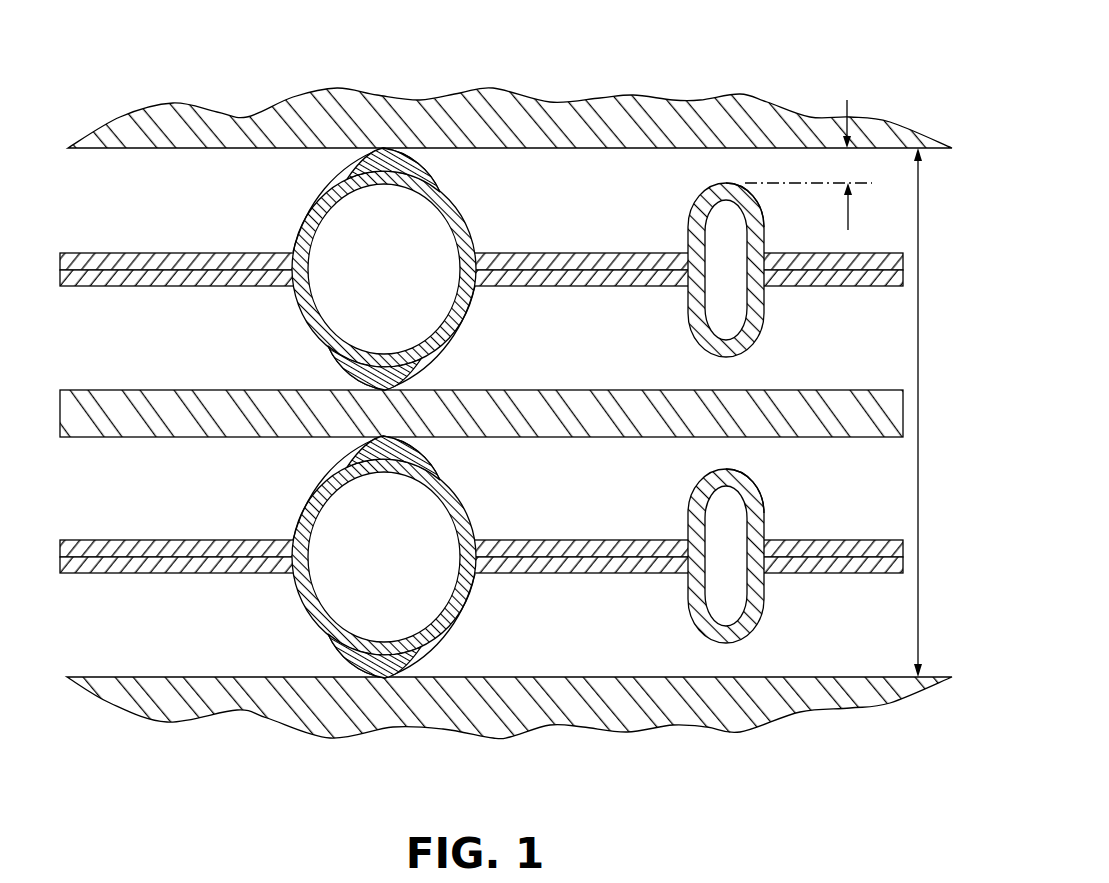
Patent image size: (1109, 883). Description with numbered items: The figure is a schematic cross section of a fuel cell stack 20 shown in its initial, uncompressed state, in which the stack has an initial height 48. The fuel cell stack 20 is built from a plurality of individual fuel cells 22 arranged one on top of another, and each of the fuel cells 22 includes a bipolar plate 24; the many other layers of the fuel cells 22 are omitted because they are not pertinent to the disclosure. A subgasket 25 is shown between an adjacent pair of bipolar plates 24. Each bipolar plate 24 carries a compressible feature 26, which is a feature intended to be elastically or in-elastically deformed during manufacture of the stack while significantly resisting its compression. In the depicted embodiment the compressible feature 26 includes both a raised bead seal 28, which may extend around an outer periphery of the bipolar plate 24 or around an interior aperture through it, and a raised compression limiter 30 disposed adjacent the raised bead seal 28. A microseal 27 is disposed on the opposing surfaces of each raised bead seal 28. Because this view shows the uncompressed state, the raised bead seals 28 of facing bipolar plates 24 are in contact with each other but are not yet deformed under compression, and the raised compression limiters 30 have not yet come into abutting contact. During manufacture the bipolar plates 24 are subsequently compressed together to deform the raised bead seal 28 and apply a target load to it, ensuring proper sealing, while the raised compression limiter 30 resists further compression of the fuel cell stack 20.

The fuel cell stack 20 is at (893, 92).
The individual fuel cell 22 is at (470, 378).
The bipolar plate 24 is at (85, 253).
The subgasket 25 is at (85, 390).
The compressible feature 26 is at (763, 323).
The microseal 27 is at (352, 152).
The raised bead seal 28 is at (401, 413).
The raised compression limiter 30 is at (748, 208).
The initial height 48 is at (918, 356).